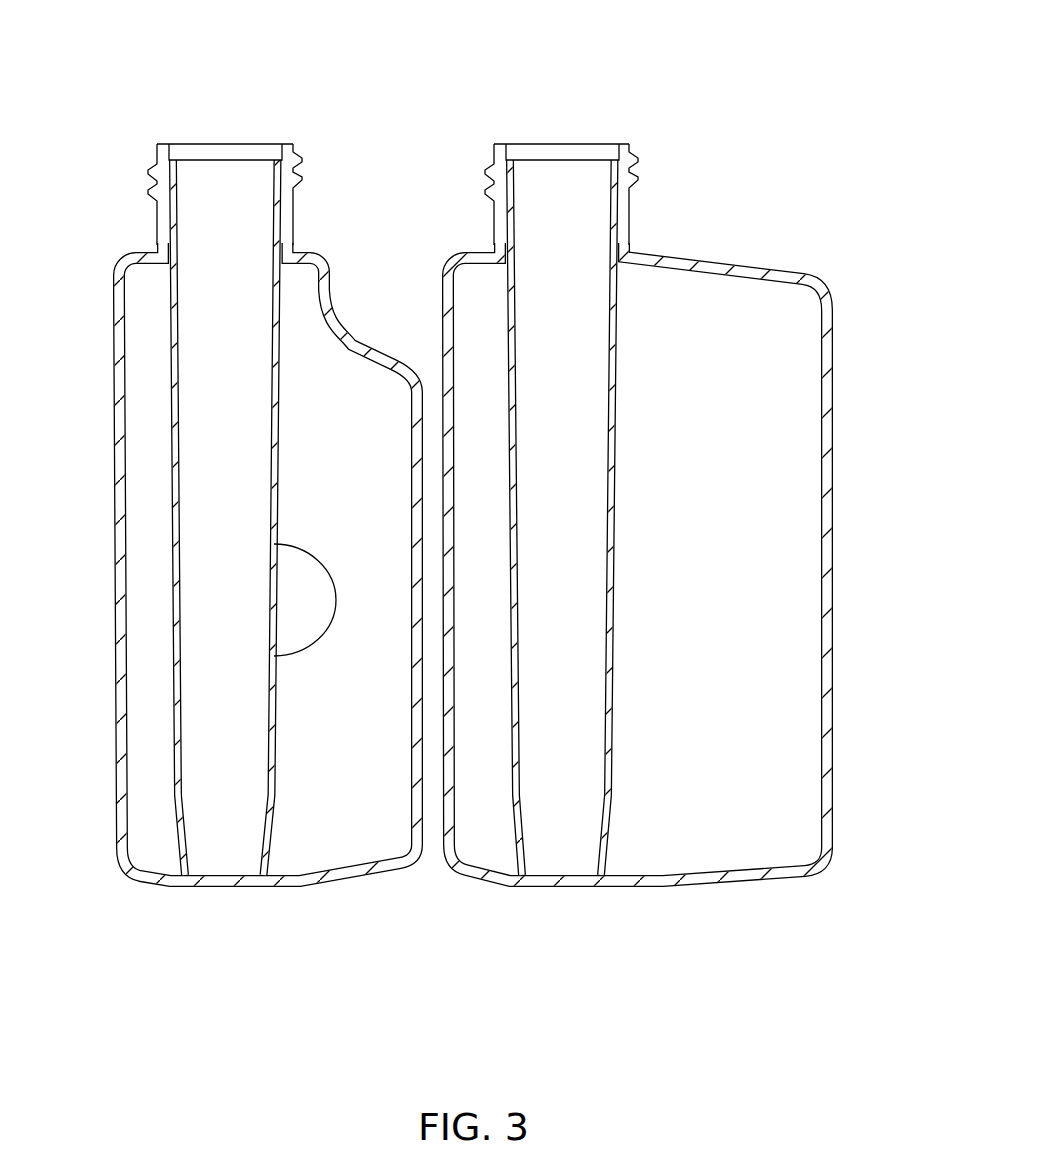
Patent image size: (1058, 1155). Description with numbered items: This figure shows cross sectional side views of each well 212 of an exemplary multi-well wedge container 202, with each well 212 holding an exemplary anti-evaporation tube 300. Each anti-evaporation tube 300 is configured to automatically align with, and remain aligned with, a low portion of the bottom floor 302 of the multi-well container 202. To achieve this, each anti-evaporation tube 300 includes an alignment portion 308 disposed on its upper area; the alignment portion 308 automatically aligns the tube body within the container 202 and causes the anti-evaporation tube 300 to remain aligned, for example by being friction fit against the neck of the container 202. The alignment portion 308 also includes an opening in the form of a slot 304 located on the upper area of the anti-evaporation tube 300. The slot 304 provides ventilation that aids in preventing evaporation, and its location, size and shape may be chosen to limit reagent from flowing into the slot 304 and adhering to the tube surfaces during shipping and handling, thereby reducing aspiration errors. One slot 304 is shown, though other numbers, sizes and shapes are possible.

The multi-well wedge container 202 is at (474, 495).
The anti-evaporation tube 300 is at (175, 183).
The bottom floor 302 is at (168, 873).
The slot 304 is at (280, 250).
The alignment portion 308 is at (237, 172).
The well 212 is at (338, 872).